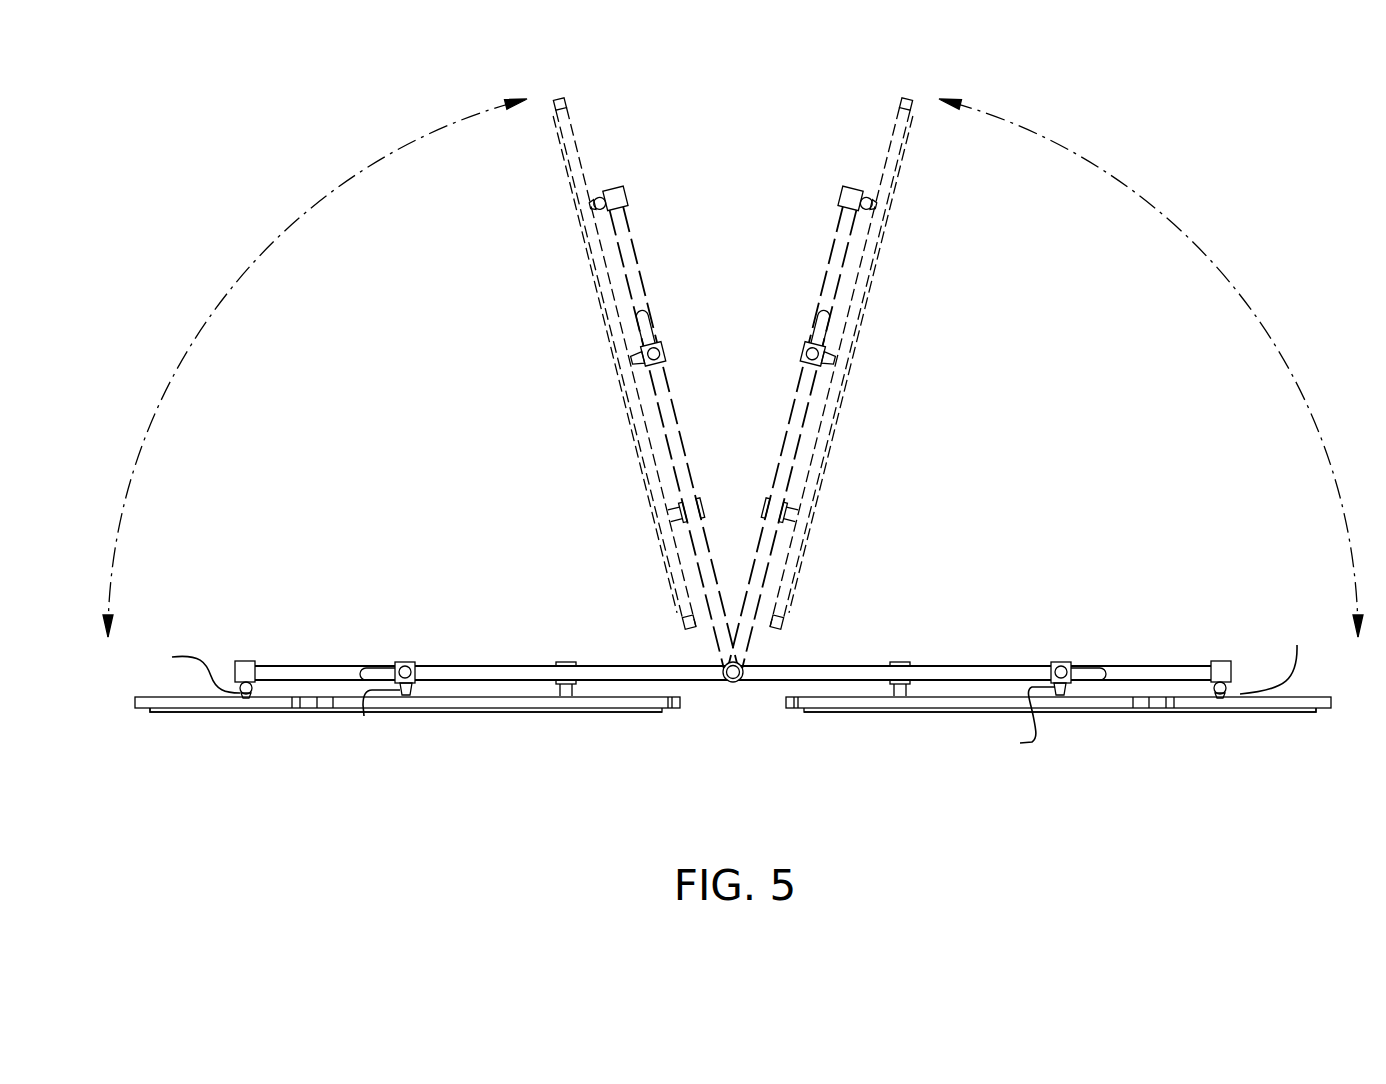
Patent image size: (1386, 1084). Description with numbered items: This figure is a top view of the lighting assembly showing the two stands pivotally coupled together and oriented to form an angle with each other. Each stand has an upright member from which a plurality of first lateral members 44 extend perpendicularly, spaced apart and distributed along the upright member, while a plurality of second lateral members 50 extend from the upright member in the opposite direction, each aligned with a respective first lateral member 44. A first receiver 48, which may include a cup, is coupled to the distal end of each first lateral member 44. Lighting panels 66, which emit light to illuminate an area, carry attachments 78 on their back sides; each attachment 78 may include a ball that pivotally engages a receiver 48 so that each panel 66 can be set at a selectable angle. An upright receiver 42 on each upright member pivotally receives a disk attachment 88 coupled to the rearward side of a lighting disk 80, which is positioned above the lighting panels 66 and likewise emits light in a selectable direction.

The upright receiver 42 is at (1060, 662).
The first lateral members 44 is at (327, 661).
The first receivers 48 is at (240, 660).
The second lateral members 50 is at (695, 683).
The lighting panels 66 is at (193, 712).
The attachments 78 is at (438, 624).
The lighting disks 80 is at (445, 712).
The disk attachments 88 is at (365, 715).